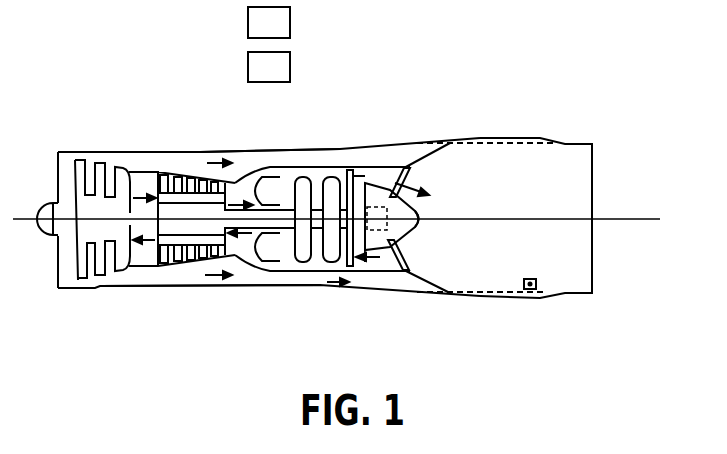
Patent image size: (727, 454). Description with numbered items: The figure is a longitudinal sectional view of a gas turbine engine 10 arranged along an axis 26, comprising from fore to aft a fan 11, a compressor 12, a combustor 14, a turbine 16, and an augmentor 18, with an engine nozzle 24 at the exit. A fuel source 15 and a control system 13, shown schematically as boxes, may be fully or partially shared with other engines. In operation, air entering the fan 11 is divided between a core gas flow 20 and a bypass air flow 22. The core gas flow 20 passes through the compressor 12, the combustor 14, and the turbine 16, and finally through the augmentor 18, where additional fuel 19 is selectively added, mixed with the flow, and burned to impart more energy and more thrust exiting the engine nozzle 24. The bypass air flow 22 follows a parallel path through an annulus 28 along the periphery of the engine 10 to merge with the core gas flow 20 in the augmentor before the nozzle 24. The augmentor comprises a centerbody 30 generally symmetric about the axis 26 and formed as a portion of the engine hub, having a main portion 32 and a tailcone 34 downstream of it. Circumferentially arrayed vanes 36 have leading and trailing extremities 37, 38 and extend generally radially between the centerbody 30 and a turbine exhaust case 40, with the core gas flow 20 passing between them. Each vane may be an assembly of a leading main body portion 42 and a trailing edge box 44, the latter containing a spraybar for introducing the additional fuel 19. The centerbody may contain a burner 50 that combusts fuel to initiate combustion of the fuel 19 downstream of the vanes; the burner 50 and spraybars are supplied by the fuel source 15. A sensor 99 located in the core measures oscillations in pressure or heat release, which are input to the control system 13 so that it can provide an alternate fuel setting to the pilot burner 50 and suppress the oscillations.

The gas turbine engine 10 is at (148, 68).
The fan 11 is at (83, 149).
The compressor 12 is at (162, 170).
The control system 13 is at (269, 68).
The combustor 14 is at (252, 176).
The fuel source 15 is at (269, 23).
The turbine 16 is at (297, 160).
The augmentor 18 is at (387, 167).
The additional fuel 19 is at (410, 168).
The core gas flow 20 is at (345, 278).
The bypass air flow 22 is at (340, 287).
The engine nozzle 24 is at (575, 157).
The axis 26 is at (612, 219).
The annulus 28 is at (262, 272).
The centerbody 30 is at (427, 207).
The main portion 32 is at (400, 233).
The tailcone 34 is at (405, 250).
The vanes 36 is at (390, 275).
The leading extremity 37 is at (364, 182).
The trailing extremity 38 is at (407, 268).
The turbine exhaust case 40 is at (396, 272).
The leading main body portion 42 is at (367, 170).
The trailing edge box 44 is at (420, 152).
The burner 50 is at (348, 172).
The sensor 99 is at (530, 290).